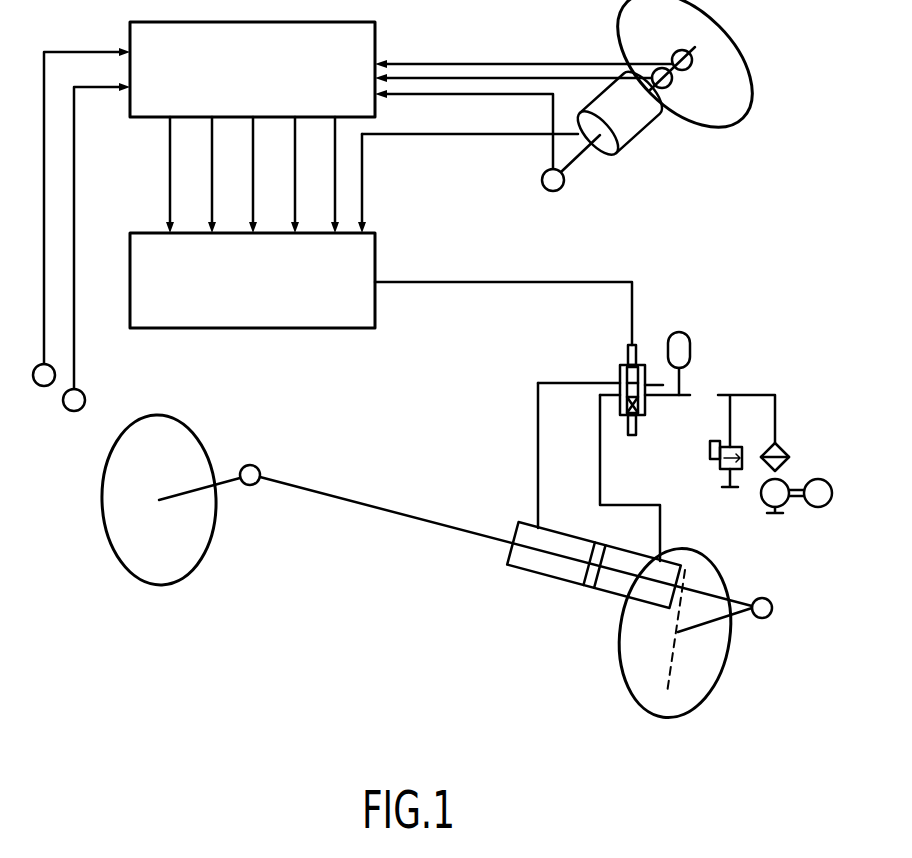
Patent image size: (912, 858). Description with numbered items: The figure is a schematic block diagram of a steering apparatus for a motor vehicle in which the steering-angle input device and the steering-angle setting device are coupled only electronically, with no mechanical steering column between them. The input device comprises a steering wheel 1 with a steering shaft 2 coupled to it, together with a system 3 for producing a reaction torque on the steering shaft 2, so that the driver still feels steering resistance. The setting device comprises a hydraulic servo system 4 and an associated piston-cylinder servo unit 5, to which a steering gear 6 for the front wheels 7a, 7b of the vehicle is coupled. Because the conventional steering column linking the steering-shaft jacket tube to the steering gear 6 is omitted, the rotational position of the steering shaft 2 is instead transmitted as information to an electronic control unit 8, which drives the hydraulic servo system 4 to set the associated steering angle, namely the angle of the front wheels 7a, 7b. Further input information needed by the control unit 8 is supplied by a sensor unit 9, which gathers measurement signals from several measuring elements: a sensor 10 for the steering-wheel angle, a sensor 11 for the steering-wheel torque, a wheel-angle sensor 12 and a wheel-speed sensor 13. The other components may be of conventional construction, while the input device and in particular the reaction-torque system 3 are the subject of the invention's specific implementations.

The steering wheel 1 is at (742, 58).
The steering shaft 2 is at (672, 82).
The system for producing a reaction torque 3 is at (640, 133).
The hydraulic servo system 4 is at (712, 378).
The piston-cylinder servo unit 5 is at (542, 575).
The steering gear 6 is at (397, 512).
The front wheel 7a is at (208, 542).
The front wheel 7b is at (625, 658).
The electronic control unit 8 is at (375, 257).
The sensor unit 9 is at (375, 33).
The sensor for measuring the steering-wheel angle 10 is at (678, 50).
The sensor for measuring the steering-wheel torque 11 is at (673, 95).
The wheel-angle sensor 12 is at (44, 386).
The wheel-speed sensor 13 is at (85, 402).